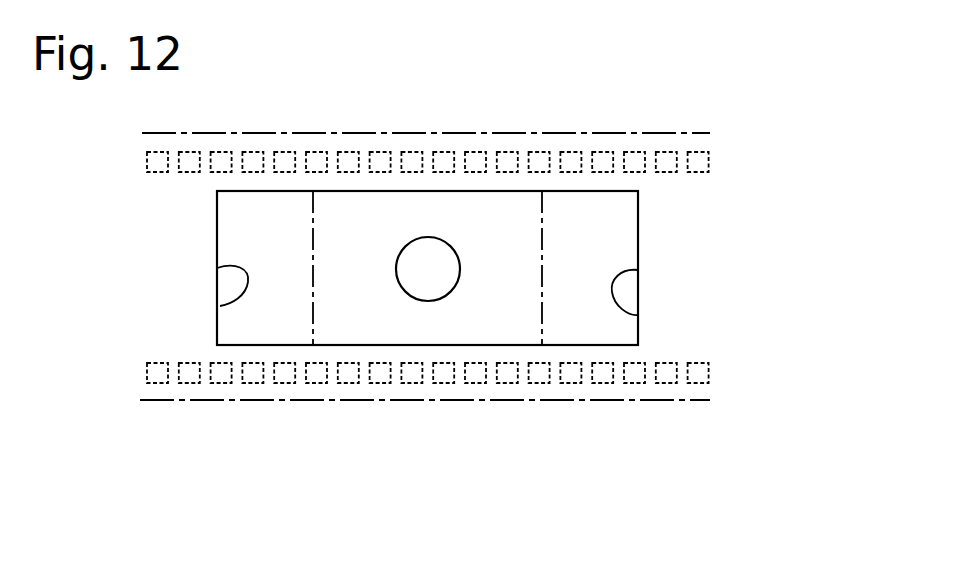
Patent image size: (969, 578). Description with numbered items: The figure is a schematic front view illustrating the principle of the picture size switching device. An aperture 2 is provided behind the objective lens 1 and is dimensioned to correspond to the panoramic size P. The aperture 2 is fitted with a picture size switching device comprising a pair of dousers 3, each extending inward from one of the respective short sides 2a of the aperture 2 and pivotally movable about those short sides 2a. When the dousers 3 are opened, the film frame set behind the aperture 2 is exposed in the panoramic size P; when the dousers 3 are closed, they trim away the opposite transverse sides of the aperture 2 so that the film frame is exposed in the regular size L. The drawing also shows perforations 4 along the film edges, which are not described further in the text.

The objective lens 1 is at (428, 249).
The aperture 2 is at (658, 242).
The short sides of aperture 2a is at (217, 268).
The dousers 3 is at (300, 307).
The perforation 4 is at (237, 388).
The regular size L is at (313, 207).
The panoramic size P is at (617, 198).